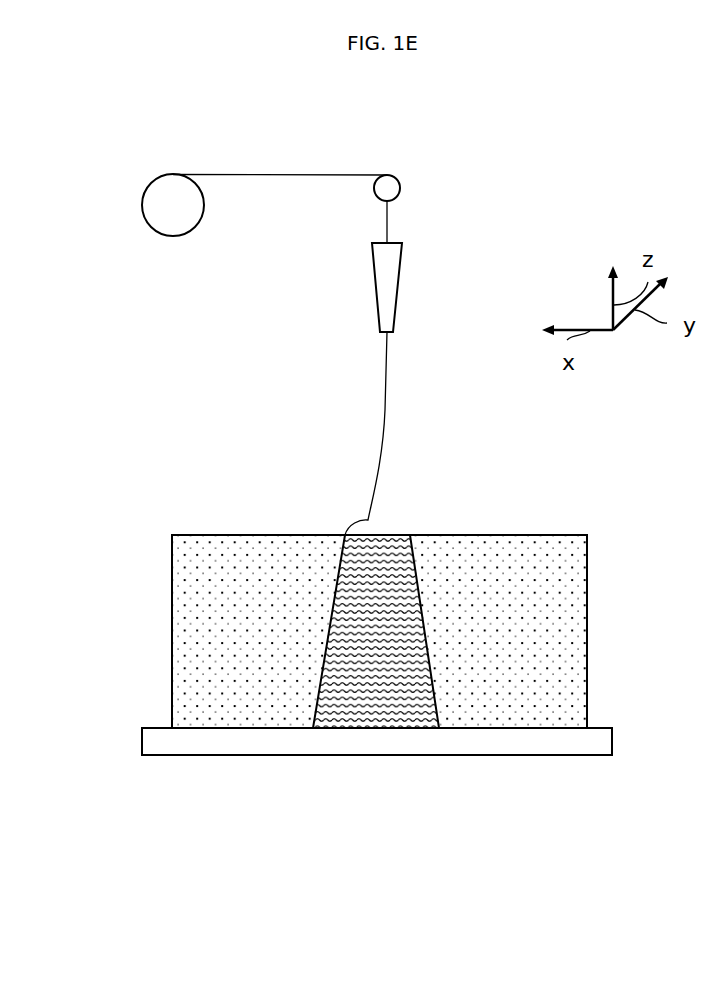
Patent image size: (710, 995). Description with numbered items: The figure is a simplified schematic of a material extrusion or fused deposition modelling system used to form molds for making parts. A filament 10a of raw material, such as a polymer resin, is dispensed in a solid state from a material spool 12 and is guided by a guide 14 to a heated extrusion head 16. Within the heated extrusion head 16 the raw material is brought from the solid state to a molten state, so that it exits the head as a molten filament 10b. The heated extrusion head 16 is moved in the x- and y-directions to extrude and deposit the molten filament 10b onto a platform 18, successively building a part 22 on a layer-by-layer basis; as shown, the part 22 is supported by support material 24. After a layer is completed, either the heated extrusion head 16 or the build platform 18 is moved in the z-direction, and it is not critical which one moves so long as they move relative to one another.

The material spool 12 is at (142, 207).
The filament 10a is at (287, 175).
The guide 14 is at (398, 190).
The heated extrusion head 16 is at (400, 287).
The molten filament 10b is at (385, 409).
The part 22 is at (378, 533).
The support material 24 is at (587, 633).
The platform 18 is at (612, 740).